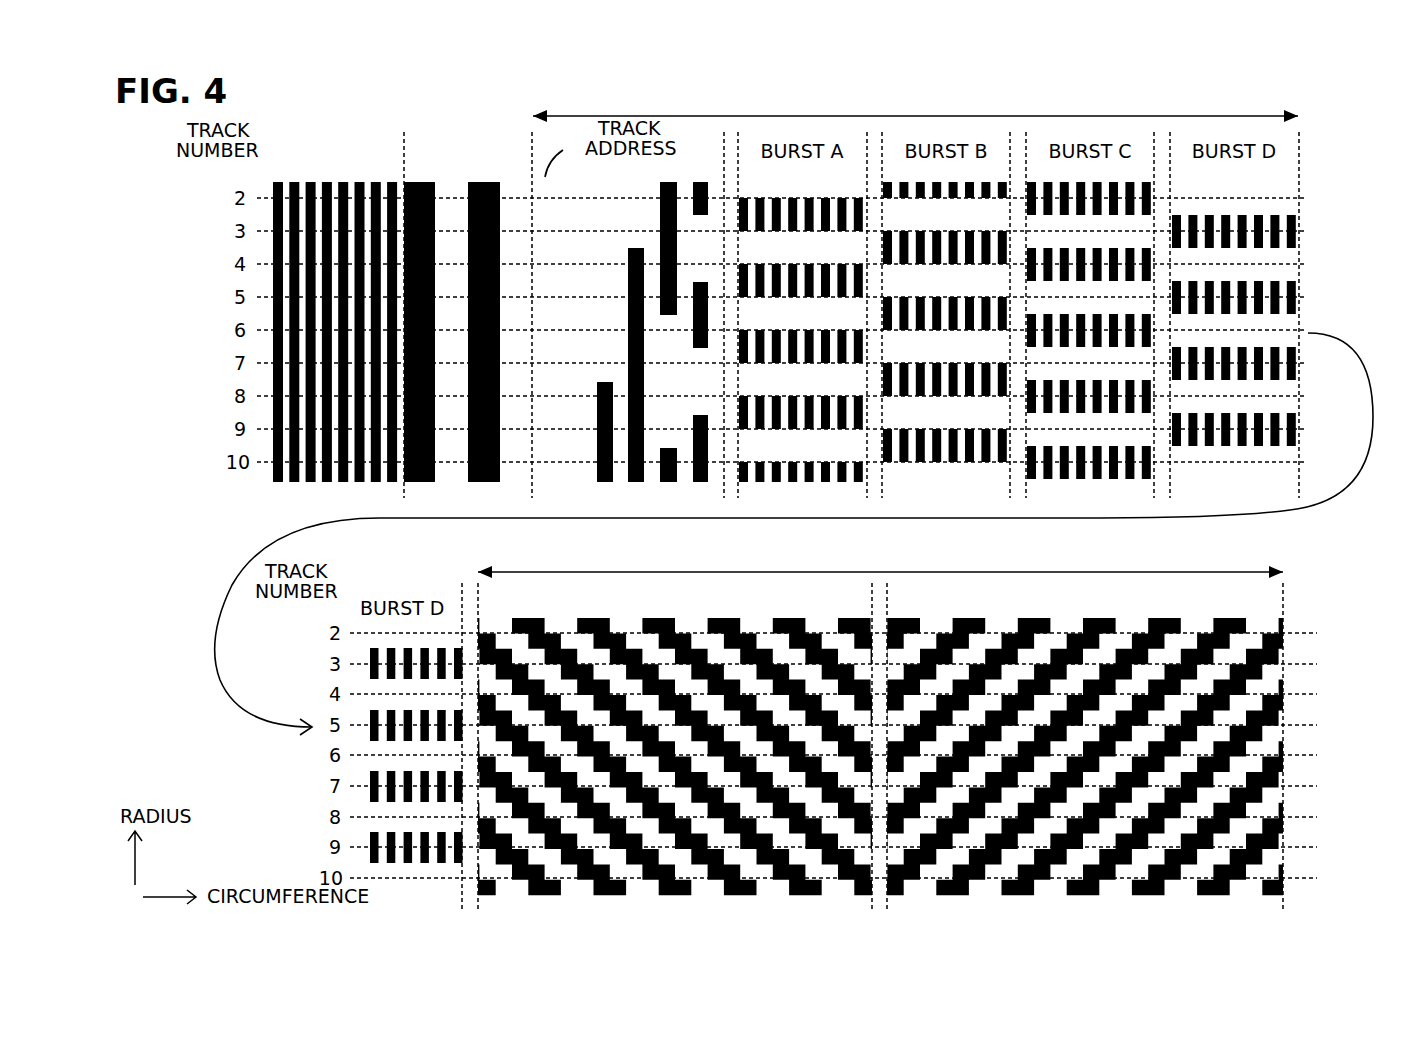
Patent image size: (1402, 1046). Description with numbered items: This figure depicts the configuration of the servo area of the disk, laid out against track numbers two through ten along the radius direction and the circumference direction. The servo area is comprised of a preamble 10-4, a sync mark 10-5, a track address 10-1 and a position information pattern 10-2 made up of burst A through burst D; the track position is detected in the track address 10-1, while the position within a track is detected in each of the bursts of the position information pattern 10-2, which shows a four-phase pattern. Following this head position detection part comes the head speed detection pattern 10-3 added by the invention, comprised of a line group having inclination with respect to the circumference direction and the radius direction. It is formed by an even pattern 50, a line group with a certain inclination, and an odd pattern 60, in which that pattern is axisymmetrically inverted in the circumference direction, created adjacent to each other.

The track address 10-1 is at (652, 319).
The position information pattern 10-2 is at (1020, 116).
The head speed detection pattern 10-3 is at (972, 569).
The preamble 10-4 is at (317, 130).
The sync mark 10-5 is at (435, 132).
The even pattern 50 is at (667, 738).
The odd pattern 60 is at (1006, 738).